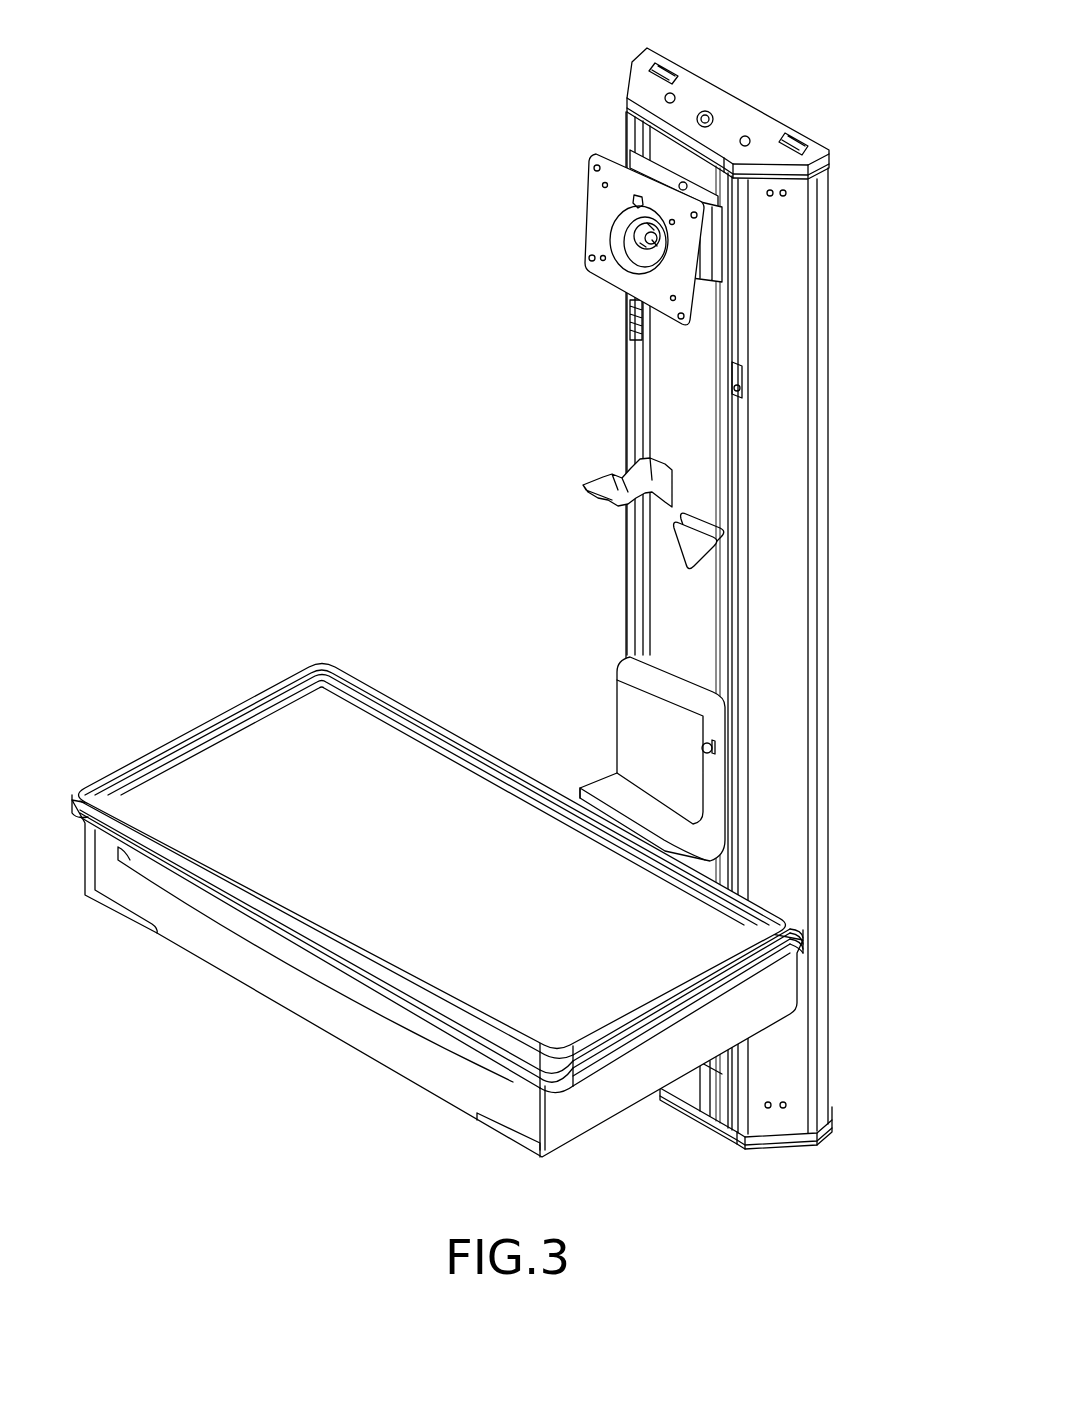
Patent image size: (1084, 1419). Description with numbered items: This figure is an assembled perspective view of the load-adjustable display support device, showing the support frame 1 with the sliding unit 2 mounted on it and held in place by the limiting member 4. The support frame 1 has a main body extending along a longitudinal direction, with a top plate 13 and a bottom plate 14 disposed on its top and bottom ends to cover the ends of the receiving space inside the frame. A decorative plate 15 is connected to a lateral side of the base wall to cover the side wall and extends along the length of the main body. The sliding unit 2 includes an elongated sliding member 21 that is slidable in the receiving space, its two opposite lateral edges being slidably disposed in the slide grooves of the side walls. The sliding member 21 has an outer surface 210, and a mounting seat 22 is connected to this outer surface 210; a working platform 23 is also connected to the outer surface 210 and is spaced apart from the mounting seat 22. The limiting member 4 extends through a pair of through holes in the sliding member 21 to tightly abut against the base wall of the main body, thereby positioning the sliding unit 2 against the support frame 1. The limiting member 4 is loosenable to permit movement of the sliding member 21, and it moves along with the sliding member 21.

The support frame 1 is at (765, 624).
The top plate 13 is at (695, 92).
The bottom plate 14 is at (688, 1108).
The decorative plate 15 is at (783, 308).
The sliding unit 2 is at (588, 383).
The sliding member 21 is at (672, 373).
The outer surface 210 is at (670, 428).
The mounting seat 22 is at (588, 212).
The working platform 23 is at (192, 718).
The limiting member 4 is at (673, 547).